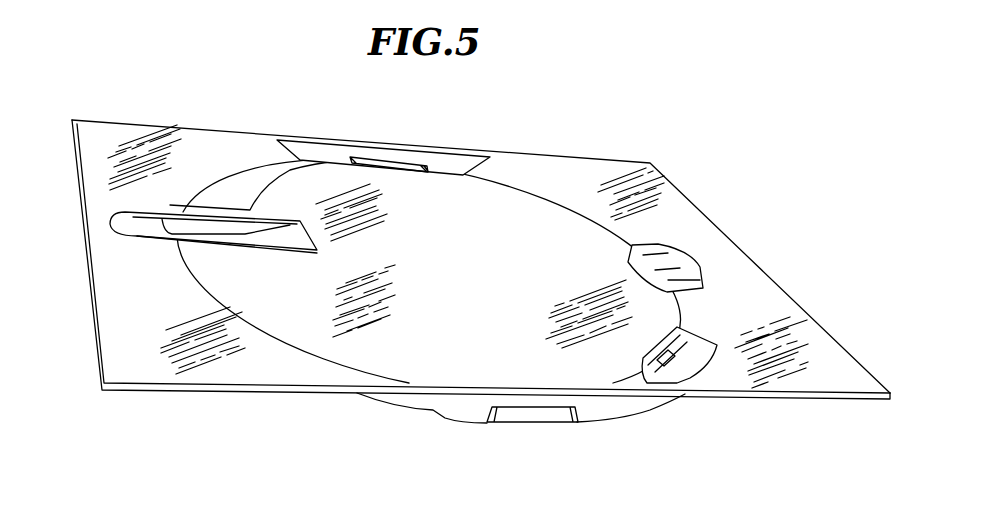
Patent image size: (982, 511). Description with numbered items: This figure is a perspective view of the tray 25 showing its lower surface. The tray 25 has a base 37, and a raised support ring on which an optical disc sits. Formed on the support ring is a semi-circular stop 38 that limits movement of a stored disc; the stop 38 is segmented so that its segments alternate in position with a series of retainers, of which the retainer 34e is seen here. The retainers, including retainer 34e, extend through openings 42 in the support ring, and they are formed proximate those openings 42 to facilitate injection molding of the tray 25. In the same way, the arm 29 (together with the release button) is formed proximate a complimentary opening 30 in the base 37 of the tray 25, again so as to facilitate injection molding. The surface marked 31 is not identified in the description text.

The tray 25 is at (482, 112).
The arm 29 is at (247, 242).
The complimentary opening 30 is at (127, 230).
The surface 31 is at (313, 223).
The retainer 34e is at (522, 412).
The base 37 is at (717, 253).
The semi-circular stop 38 is at (600, 410).
The openings 42 is at (648, 290).